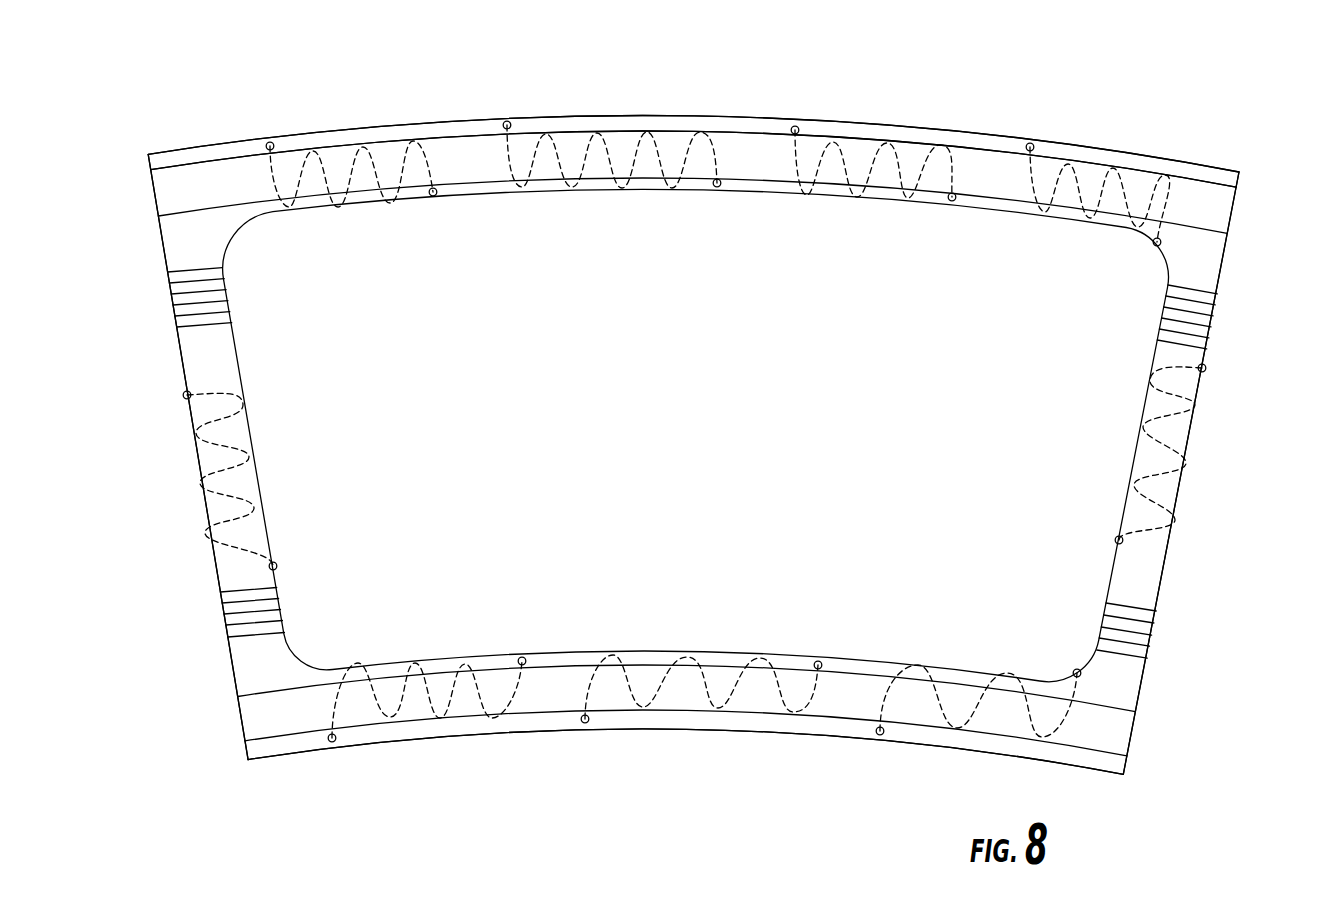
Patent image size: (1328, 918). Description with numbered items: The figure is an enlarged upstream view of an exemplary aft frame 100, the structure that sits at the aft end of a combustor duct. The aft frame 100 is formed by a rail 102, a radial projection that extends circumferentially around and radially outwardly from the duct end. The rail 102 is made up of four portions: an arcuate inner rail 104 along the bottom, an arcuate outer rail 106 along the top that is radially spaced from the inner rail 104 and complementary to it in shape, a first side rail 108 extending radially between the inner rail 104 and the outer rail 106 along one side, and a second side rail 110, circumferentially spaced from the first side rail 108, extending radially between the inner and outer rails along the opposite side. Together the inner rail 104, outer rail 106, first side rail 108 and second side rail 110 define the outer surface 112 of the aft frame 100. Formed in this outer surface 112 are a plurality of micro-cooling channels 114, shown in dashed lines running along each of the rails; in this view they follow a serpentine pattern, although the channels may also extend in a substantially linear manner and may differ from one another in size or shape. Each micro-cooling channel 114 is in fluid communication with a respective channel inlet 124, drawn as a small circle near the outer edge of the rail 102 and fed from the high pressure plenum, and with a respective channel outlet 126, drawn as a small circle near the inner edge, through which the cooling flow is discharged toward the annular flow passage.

The aft frame 100 is at (527, 52).
The rail 102 is at (750, 108).
The inner rail 104 is at (782, 734).
The outer rail 106 is at (873, 122).
The first side rail 108 is at (200, 468).
The second side rail 110 is at (1190, 457).
The outer surface 112 is at (1052, 170).
The micro-cooling channel 114 is at (386, 145).
The channel inlet 124 is at (271, 142).
The channel outlet 126 is at (436, 198).